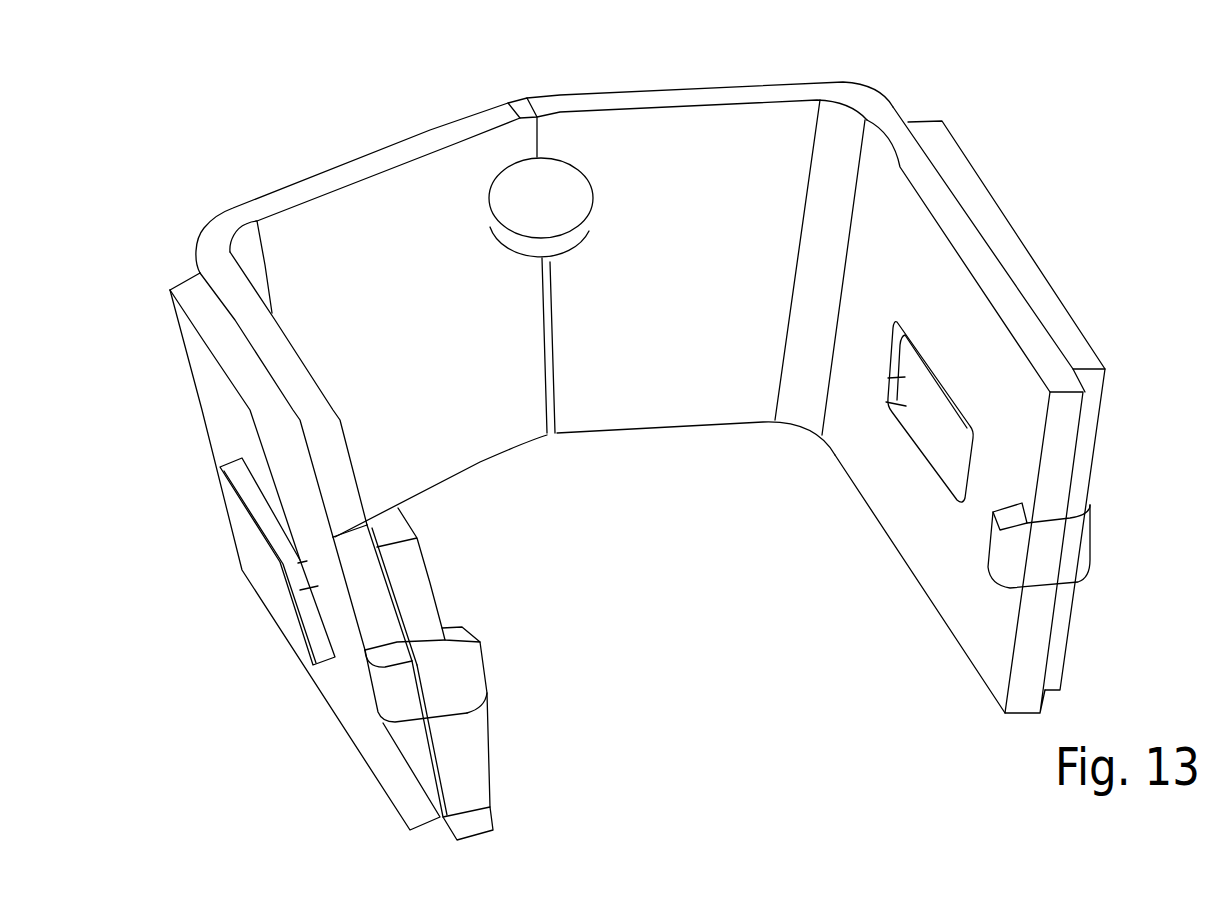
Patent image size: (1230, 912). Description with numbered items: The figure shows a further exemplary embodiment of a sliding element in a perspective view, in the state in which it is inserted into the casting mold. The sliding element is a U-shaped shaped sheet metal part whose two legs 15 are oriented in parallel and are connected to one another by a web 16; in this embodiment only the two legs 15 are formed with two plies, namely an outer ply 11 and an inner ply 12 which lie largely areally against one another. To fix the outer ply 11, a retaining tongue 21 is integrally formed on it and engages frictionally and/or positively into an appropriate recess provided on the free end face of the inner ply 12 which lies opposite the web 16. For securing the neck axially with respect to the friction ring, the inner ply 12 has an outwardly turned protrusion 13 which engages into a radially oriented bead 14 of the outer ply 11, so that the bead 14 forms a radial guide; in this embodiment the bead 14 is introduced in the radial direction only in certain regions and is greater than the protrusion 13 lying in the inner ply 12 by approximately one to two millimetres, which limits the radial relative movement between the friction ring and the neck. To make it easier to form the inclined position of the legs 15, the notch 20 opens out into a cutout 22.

The outer ply 11 is at (363, 740).
The inner ply 12 is at (397, 495).
The protrusion 13 is at (947, 432).
The bead 14 is at (257, 545).
The leg 15 is at (160, 330).
The web 16 is at (652, 80).
The notch 20 is at (548, 436).
The retaining tongue 21 is at (452, 687).
The cutout 22 is at (517, 197).